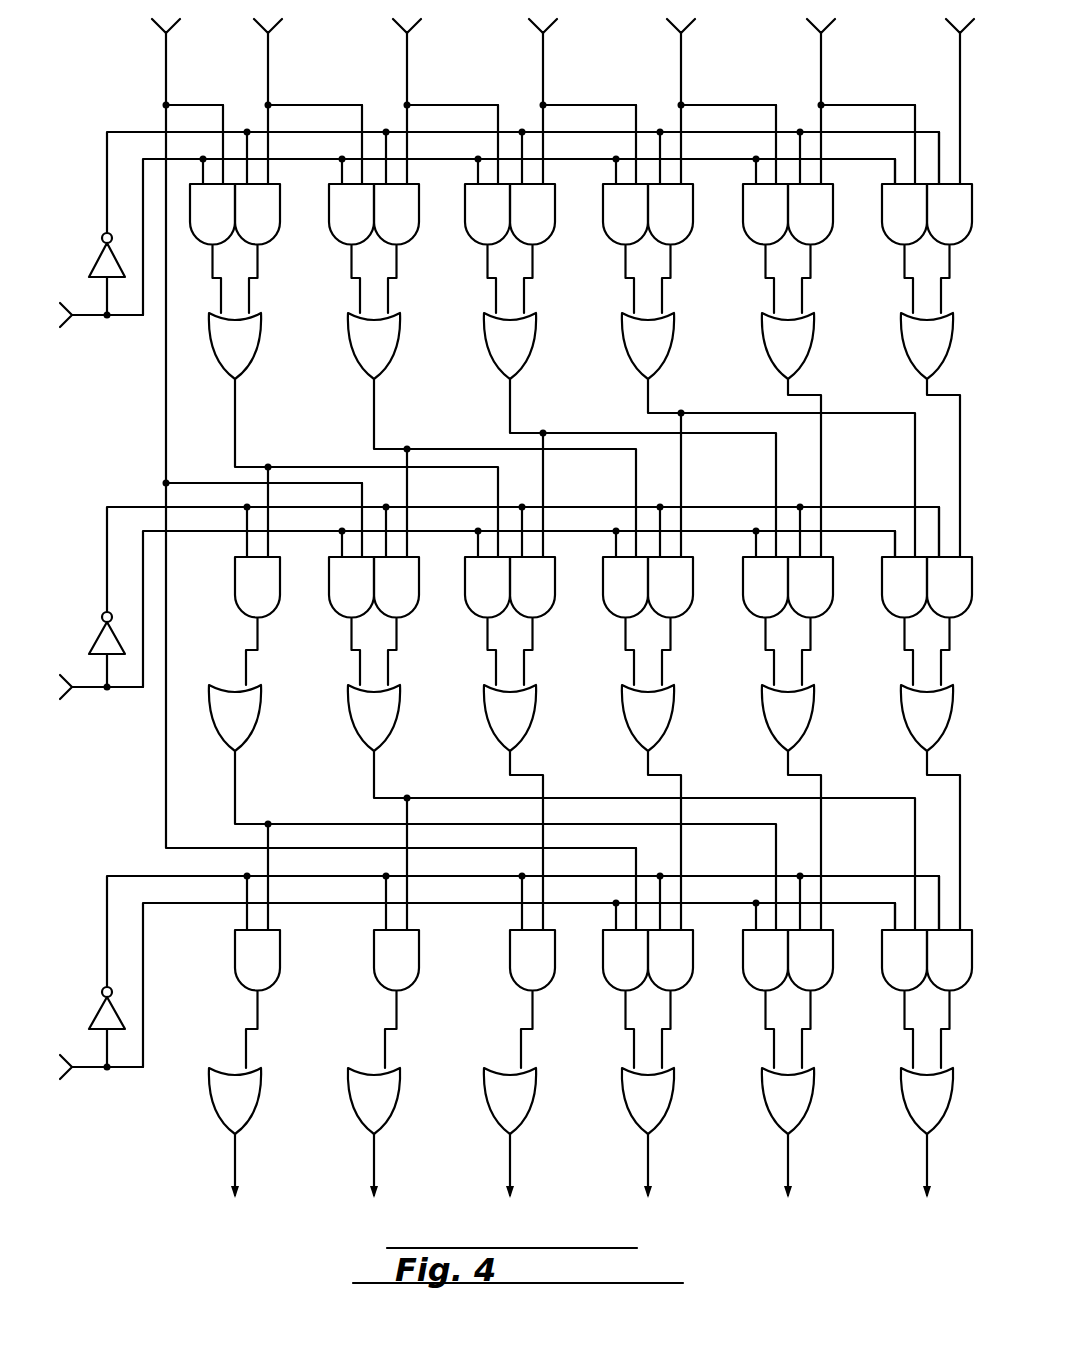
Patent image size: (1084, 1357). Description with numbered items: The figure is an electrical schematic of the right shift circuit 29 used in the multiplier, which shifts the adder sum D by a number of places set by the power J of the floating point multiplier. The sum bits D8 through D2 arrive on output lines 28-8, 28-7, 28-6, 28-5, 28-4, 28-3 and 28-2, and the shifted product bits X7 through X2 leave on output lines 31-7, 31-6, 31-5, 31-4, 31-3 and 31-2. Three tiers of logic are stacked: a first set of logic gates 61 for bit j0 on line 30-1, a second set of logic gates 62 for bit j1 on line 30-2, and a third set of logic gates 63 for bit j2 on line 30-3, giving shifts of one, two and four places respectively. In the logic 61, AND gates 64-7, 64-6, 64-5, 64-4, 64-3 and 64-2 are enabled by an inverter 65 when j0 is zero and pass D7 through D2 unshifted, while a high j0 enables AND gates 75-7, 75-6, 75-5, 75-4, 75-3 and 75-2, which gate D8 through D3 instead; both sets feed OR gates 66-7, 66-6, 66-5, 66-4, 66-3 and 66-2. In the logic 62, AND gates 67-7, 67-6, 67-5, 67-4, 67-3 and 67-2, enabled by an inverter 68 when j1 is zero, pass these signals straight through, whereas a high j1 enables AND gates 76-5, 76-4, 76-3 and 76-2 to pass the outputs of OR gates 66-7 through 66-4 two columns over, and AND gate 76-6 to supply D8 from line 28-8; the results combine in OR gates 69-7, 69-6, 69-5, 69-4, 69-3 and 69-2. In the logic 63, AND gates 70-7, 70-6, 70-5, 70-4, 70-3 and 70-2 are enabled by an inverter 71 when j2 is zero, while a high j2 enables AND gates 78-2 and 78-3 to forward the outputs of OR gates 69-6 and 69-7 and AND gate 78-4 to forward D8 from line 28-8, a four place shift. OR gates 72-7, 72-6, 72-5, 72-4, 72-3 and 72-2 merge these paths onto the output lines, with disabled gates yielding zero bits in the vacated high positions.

The shift circuit 29 is at (111, 79).
The output line 28-8 is at (167, 60).
The output line 28-7 is at (268, 81).
The output line 28-6 is at (407, 81).
The output line 28-5 is at (543, 81).
The output line 28-4 is at (681, 81).
The output line 28-3 is at (821, 81).
The output line 28-2 is at (960, 81).
The first set of logic gates 61 is at (151, 376).
The second set of logic gates 62 is at (151, 744).
The third set of logic gates 63 is at (161, 1122).
The inverter 65 is at (99, 241).
The inverter 68 is at (99, 620).
The inverter 71 is at (97, 995).
The line 30-1 is at (119, 320).
The line 30-2 is at (119, 692).
The line 30-3 is at (119, 1072).
The AND gate 75-7 is at (212, 209).
The AND gate 75-6 is at (351, 209).
The AND gate 75-5 is at (487, 209).
The AND gate 75-4 is at (625, 209).
The AND gate 75-3 is at (765, 209).
The AND gate 75-2 is at (904, 209).
The AND gate 64-7 is at (257, 222).
The AND gate 64-6 is at (396, 222).
The AND gate 64-5 is at (532, 222).
The AND gate 64-4 is at (670, 222).
The AND gate 64-3 is at (810, 222).
The AND gate 64-2 is at (949, 222).
The OR gate 66-7 is at (353, 435).
The OR gate 66-6 is at (492, 435).
The OR gate 66-5 is at (630, 435).
The OR gate 66-4 is at (768, 435).
The OR gate 66-3 is at (791, 435).
The OR gate 66-2 is at (930, 435).
The AND gate 76-6 is at (351, 584).
The AND gate 76-5 is at (487, 608).
The AND gate 76-4 is at (625, 608).
The AND gate 76-3 is at (765, 608).
The AND gate 76-2 is at (904, 608).
The AND gate 67-7 is at (257, 596).
The AND gate 67-6 is at (396, 596).
The AND gate 67-5 is at (532, 596).
The AND gate 67-4 is at (670, 596).
The AND gate 67-3 is at (810, 596).
The AND gate 67-2 is at (949, 596).
The OR gate 69-7 is at (492, 807).
The OR gate 69-6 is at (631, 807).
The OR gate 69-5 is at (513, 807).
The OR gate 69-4 is at (651, 807).
The OR gate 69-3 is at (791, 807).
The OR gate 69-2 is at (930, 807).
The AND gate 78-4 is at (625, 958).
The AND gate 78-3 is at (765, 985).
The AND gate 78-2 is at (904, 985).
The AND gate 70-7 is at (257, 972).
The AND gate 70-6 is at (396, 972).
The AND gate 70-5 is at (532, 972).
The AND gate 70-4 is at (670, 972).
The AND gate 70-3 is at (810, 972).
The AND gate 70-2 is at (949, 972).
The OR gate 72-7 is at (235, 1101).
The OR gate 72-6 is at (374, 1101).
The OR gate 72-5 is at (510, 1101).
The OR gate 72-4 is at (648, 1101).
The OR gate 72-3 is at (788, 1101).
The OR gate 72-2 is at (927, 1101).
The output line 31-7 is at (235, 1161).
The output line 31-6 is at (374, 1161).
The output line 31-5 is at (510, 1161).
The output line 31-4 is at (648, 1161).
The output line 31-3 is at (788, 1161).
The output line 31-2 is at (927, 1161).